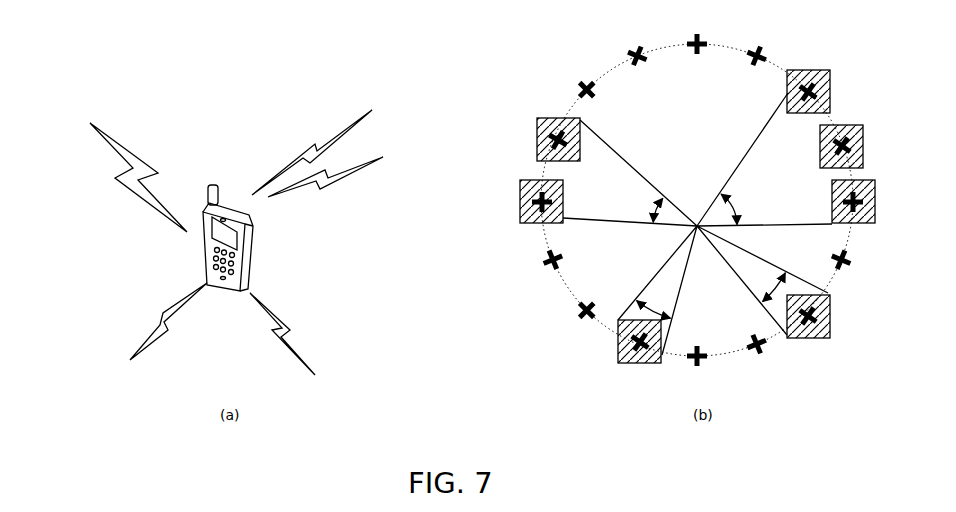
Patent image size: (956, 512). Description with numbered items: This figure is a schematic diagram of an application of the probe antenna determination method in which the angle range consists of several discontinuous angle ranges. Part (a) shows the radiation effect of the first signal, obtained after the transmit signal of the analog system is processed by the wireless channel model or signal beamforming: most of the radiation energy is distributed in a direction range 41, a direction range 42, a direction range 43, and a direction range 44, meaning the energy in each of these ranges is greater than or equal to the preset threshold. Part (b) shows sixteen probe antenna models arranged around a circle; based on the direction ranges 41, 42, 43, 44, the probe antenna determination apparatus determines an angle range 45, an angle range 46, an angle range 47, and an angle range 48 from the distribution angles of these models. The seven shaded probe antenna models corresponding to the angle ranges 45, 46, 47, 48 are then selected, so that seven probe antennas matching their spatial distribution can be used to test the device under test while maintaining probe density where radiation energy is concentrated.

The direction range 41 is at (101, 109).
The direction range 42 is at (305, 110).
The direction range 43 is at (323, 347).
The direction range 44 is at (162, 360).
The angle range 45 is at (640, 206).
The angle range 46 is at (746, 209).
The angle range 47 is at (768, 287).
The angle range 48 is at (655, 302).